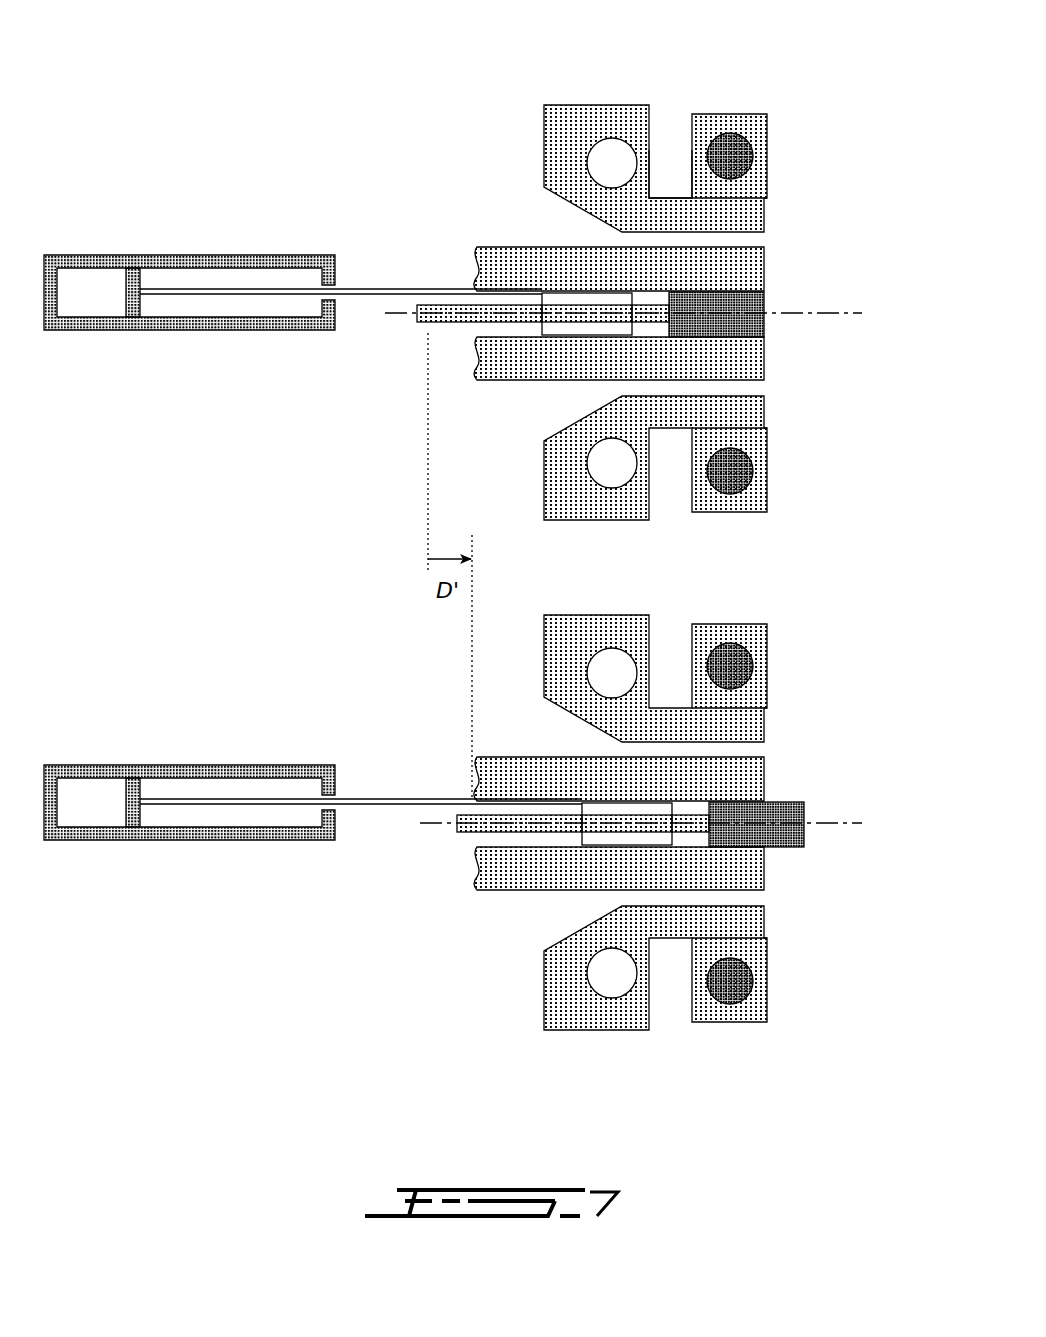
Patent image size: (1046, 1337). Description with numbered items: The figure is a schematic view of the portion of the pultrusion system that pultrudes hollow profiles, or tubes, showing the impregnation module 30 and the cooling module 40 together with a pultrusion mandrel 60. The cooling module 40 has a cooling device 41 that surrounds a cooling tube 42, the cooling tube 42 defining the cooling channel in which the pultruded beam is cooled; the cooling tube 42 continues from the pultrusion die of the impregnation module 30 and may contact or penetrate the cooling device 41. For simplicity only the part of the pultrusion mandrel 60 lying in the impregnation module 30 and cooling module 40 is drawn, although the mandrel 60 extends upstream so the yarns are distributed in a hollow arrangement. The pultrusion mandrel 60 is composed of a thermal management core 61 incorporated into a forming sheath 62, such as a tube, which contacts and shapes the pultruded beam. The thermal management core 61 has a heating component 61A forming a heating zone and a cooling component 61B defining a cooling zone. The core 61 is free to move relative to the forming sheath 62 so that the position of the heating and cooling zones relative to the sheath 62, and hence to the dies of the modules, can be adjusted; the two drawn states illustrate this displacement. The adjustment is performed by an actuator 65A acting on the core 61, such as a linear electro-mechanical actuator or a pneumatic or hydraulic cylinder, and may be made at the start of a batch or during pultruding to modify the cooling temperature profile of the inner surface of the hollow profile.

The impregnation module 30 is at (680, 576).
The cooling module 40 is at (877, 150).
The cooling device 41 is at (768, 125).
The cooling tube 42 is at (655, 196).
The pultrusion mandrel 60 is at (671, 584).
The thermal management core 61 is at (646, 584).
The heating component 61A is at (560, 290).
The cooling component 61B is at (767, 300).
The forming sheath 62 is at (766, 270).
The actuator 65A is at (190, 255).